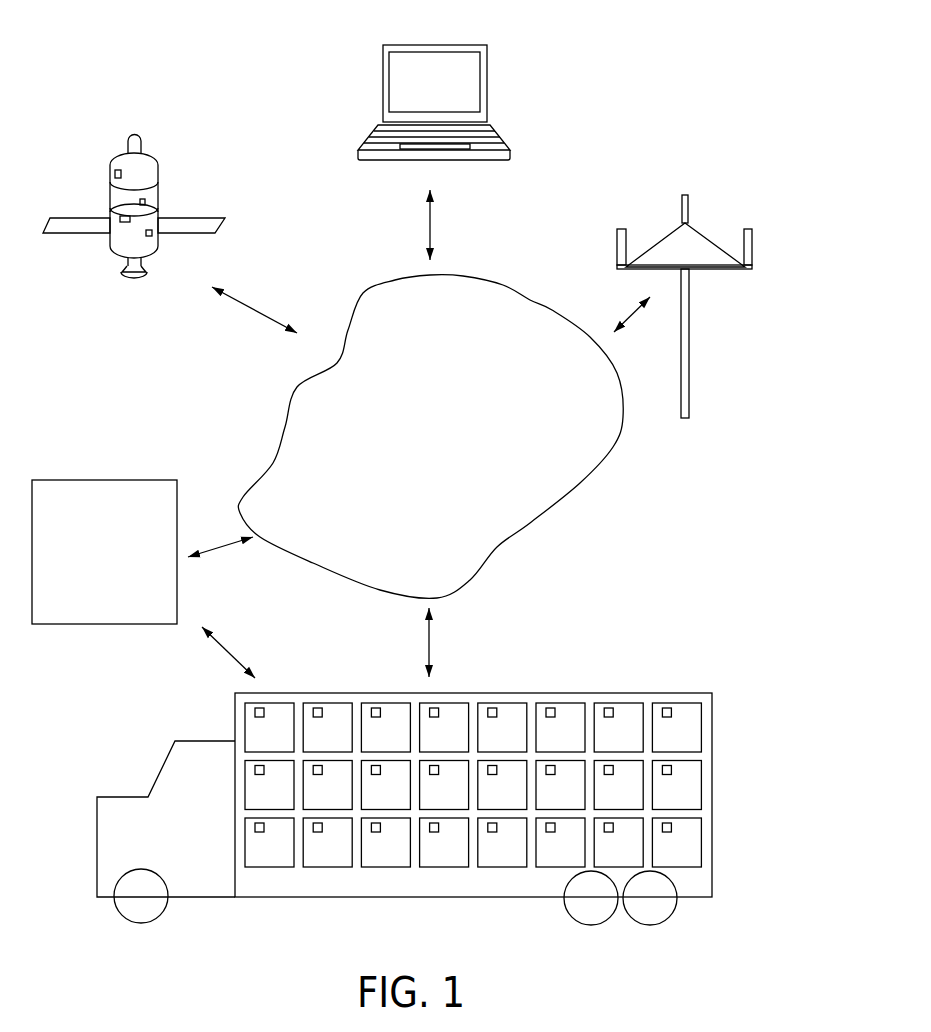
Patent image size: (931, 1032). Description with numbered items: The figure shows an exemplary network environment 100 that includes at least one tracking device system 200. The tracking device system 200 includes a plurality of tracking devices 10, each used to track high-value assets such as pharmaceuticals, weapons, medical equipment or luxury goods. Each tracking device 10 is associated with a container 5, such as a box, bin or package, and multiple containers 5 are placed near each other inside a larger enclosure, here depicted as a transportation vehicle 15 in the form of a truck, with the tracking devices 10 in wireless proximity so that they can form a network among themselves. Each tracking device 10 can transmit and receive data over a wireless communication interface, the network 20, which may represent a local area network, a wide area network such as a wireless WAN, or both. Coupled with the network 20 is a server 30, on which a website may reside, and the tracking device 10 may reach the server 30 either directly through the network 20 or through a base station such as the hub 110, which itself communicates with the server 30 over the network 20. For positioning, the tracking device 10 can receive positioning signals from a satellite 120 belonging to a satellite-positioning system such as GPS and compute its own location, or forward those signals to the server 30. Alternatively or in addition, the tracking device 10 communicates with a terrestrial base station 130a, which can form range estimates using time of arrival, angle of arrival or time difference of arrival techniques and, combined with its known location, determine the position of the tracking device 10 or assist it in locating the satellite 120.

The network environment 100 is at (58, 33).
The network 20 is at (418, 460).
The server 30 is at (488, 76).
The hub 110 is at (87, 575).
The satellite 120 is at (225, 220).
The base station 130a is at (756, 224).
The transportation vehicle 15 is at (395, 764).
The tracking device system 200 is at (253, 885).
The container 5 is at (473, 726).
The tracking device 10 is at (550, 706).